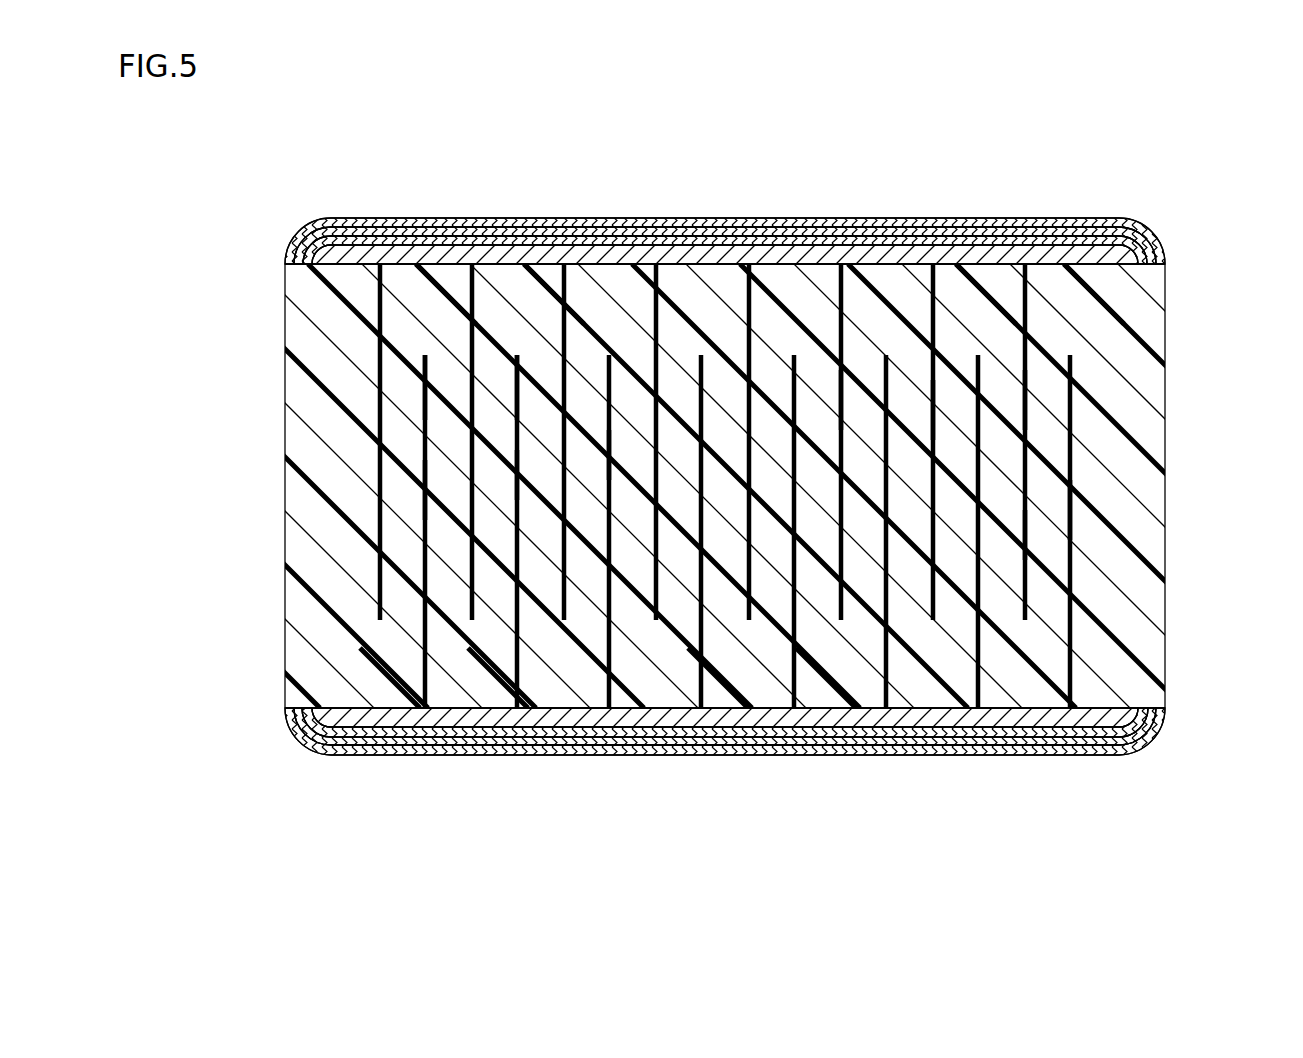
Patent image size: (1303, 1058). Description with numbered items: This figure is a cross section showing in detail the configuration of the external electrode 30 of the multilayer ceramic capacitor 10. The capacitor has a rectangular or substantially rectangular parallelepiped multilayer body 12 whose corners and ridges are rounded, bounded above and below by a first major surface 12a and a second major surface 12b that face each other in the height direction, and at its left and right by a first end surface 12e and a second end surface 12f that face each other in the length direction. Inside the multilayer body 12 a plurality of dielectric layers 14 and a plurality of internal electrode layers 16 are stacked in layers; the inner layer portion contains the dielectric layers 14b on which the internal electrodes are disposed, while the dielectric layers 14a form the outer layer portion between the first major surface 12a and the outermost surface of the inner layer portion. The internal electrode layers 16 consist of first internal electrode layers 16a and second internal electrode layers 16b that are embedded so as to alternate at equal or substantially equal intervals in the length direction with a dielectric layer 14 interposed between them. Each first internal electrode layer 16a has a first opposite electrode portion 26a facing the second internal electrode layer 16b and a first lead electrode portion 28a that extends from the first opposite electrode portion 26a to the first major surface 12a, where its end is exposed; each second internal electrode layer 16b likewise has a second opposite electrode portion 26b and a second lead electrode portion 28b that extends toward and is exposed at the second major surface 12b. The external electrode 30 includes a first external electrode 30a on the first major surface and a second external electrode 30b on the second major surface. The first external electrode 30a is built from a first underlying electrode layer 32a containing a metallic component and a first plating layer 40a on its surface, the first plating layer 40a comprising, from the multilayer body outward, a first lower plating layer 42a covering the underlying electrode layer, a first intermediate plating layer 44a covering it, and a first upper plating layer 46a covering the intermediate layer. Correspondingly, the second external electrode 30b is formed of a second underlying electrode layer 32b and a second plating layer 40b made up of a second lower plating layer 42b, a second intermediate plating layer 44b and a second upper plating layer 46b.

The multilayer ceramic capacitor 10 is at (331, 171).
The multilayer body 12 is at (278, 292).
The first major surface 12a is at (600, 262).
The second major surface 12b is at (563, 712).
The first end surface 12e is at (283, 508).
The second end surface 12f is at (1167, 555).
The dielectric layer 14 is at (651, 485).
The dielectric layer of outer layer portion 14a is at (323, 570).
The dielectric layer of inner layer portion 14b is at (397, 507).
The internal electrode layer 16 is at (728, 486).
The first internal electrode layer 16a is at (548, 390).
The second internal electrode layer 16b is at (503, 602).
The first opposite electrode portion 26a is at (517, 357).
The second opposite electrode portion 26b is at (610, 450).
The first lead electrode portion 28a is at (565, 315).
The second lead electrode portion 28b is at (515, 668).
The external electrode 30 is at (725, 490).
The first external electrode 30a is at (703, 124).
The second external electrode 30b is at (572, 858).
The first underlying electrode layer 32a is at (720, 258).
The second underlying electrode layer 32b is at (592, 718).
The first plating layer 40a is at (757, 163).
The second plating layer 40b is at (787, 814).
The first lower plating layer 42a is at (773, 243).
The second lower plating layer 42b is at (700, 741).
The first intermediate plating layer 44a is at (828, 233).
The second intermediate plating layer 44b is at (725, 783).
The first upper plating layer 46a is at (893, 224).
The second upper plating layer 46b is at (755, 750).